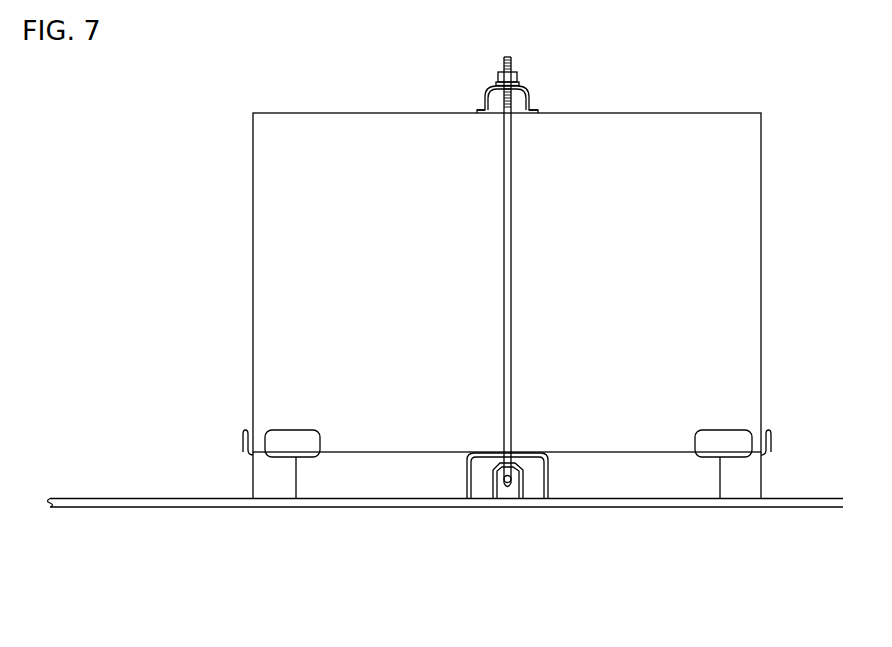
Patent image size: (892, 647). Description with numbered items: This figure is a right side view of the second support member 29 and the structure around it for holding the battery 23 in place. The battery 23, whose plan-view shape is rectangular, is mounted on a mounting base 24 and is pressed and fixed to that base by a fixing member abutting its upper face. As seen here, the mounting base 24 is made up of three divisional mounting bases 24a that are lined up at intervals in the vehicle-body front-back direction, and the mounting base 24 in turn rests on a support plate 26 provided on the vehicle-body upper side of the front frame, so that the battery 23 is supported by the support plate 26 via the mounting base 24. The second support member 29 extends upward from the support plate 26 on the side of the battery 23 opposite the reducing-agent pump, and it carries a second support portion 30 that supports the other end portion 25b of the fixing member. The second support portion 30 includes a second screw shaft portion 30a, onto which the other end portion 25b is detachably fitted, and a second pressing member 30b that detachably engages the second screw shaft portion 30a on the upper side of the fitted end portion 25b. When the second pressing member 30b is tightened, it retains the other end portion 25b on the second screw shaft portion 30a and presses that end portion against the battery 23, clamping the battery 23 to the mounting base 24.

The battery 23 is at (253, 237).
The mounting base 24 is at (244, 473).
The divisional mounting base 24a is at (278, 487).
The other end portion of the fixing member 25b is at (530, 96).
The support plate 26 is at (145, 498).
The second support member 29 is at (512, 262).
The second support portion 30 is at (497, 61).
The second screw shaft portion 30a is at (487, 96).
The second pressing member 30b is at (498, 77).